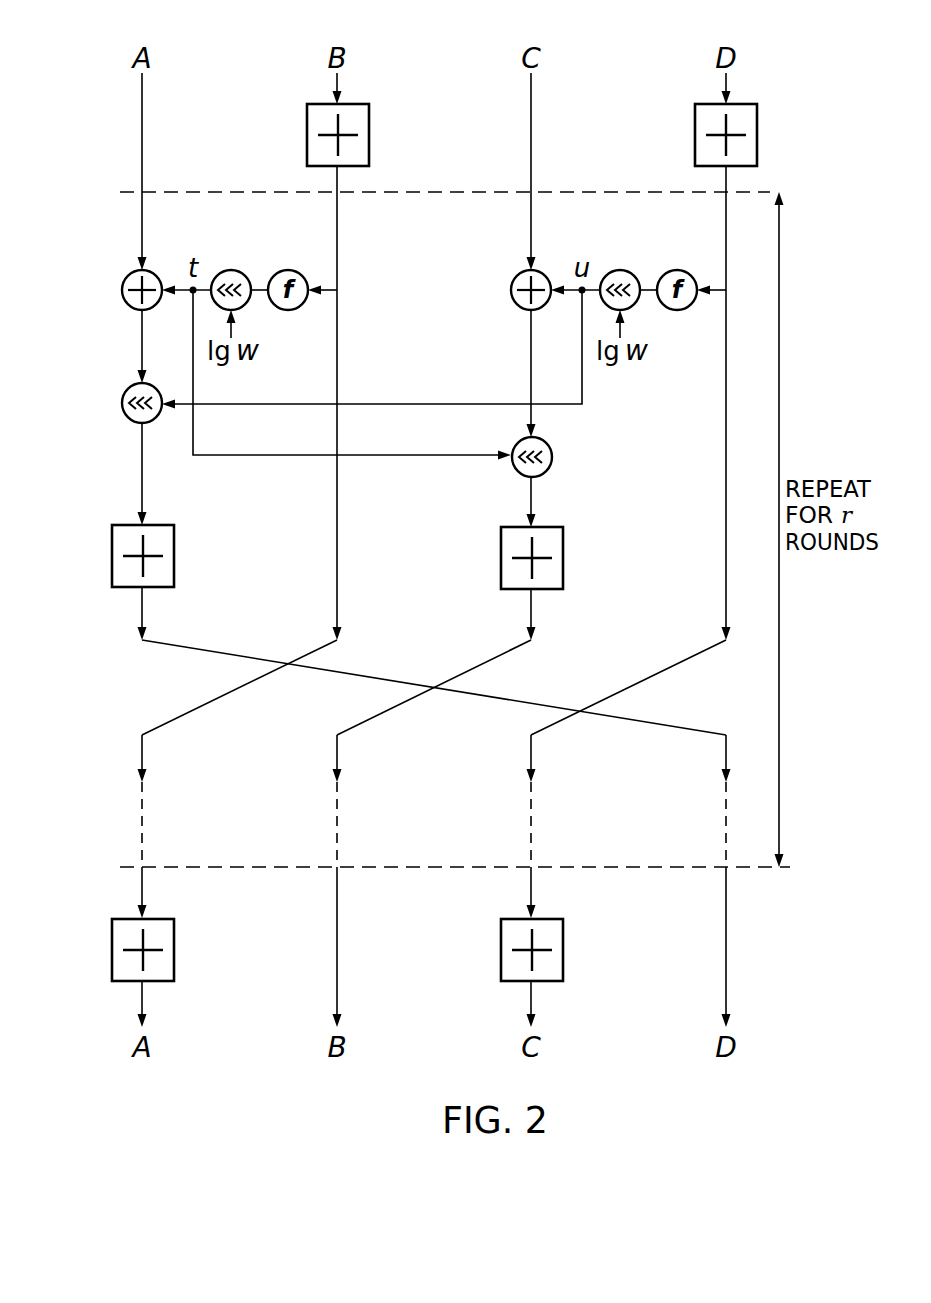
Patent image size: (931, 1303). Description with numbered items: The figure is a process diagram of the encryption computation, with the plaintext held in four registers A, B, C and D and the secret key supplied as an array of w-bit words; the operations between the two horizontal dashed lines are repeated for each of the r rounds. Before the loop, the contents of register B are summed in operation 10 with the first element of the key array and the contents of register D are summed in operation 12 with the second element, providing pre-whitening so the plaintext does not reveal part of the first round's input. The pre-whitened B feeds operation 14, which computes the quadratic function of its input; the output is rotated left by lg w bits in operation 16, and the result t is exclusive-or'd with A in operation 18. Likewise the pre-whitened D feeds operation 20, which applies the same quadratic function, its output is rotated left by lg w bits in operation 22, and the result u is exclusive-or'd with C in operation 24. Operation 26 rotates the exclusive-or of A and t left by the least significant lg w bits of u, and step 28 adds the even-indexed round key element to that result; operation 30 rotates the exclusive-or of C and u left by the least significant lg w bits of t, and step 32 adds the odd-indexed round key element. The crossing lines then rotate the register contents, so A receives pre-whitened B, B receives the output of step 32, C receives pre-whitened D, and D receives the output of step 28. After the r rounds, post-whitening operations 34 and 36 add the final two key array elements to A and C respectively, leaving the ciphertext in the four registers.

The summing operation 10 is at (307, 135).
The summing operation 12 is at (695, 135).
The function operation 14 is at (288, 270).
The rotation operation 16 is at (232, 270).
The exclusive-or operation 18 is at (122, 292).
The function operation 20 is at (677, 270).
The rotation operation 22 is at (621, 270).
The exclusive-or operation 24 is at (511, 292).
The data-dependent rotation operation 26 is at (122, 405).
The key addition step 28 is at (112, 557).
The data-dependent rotation operation 30 is at (553, 455).
The key addition step 32 is at (501, 557).
The post-whitening operation 34 is at (112, 952).
The post-whitening operation 36 is at (501, 952).